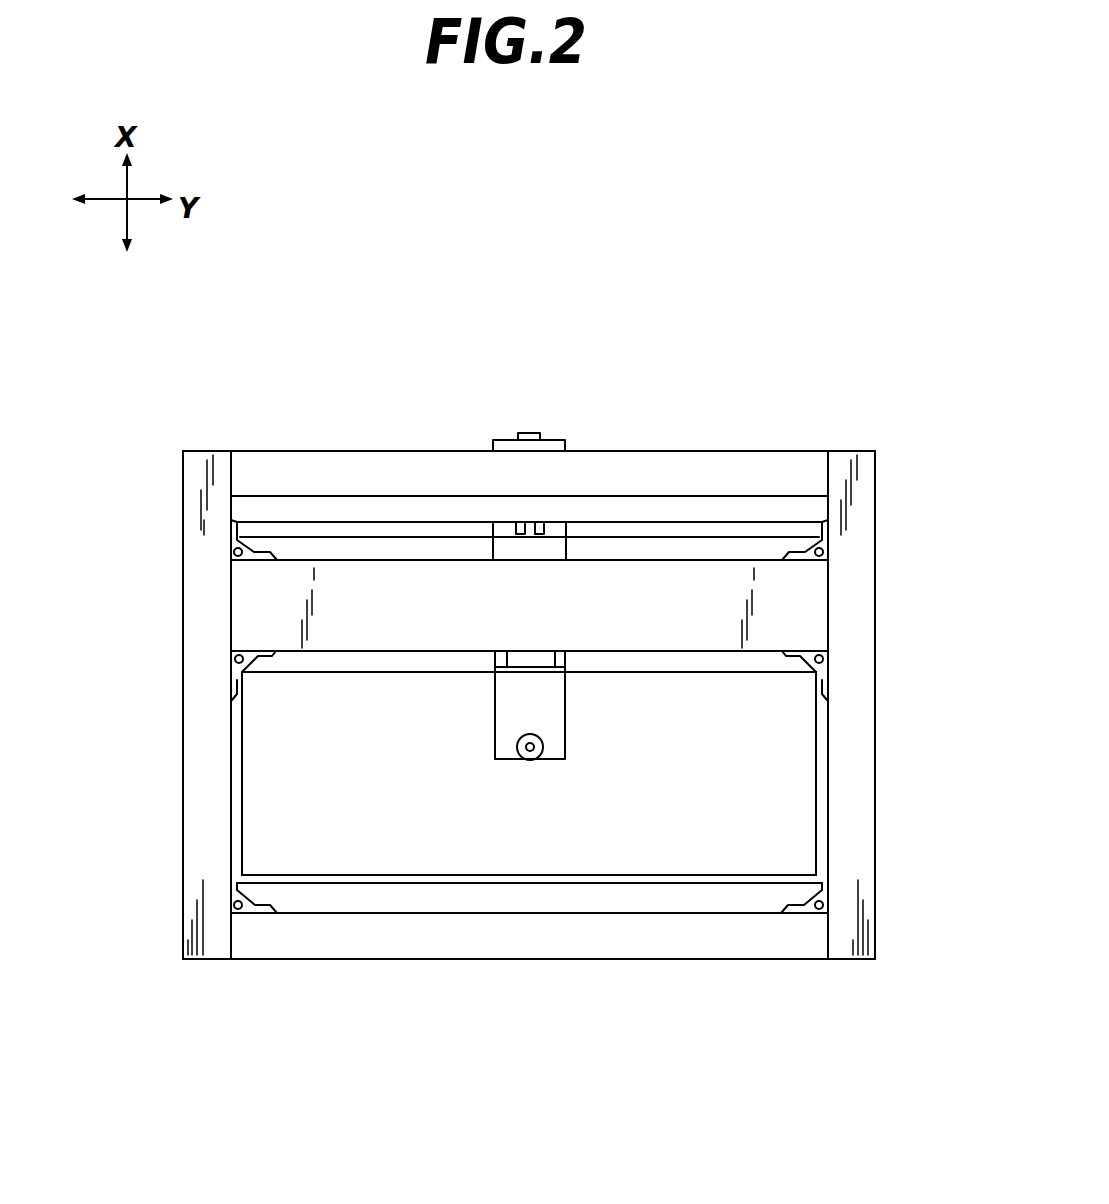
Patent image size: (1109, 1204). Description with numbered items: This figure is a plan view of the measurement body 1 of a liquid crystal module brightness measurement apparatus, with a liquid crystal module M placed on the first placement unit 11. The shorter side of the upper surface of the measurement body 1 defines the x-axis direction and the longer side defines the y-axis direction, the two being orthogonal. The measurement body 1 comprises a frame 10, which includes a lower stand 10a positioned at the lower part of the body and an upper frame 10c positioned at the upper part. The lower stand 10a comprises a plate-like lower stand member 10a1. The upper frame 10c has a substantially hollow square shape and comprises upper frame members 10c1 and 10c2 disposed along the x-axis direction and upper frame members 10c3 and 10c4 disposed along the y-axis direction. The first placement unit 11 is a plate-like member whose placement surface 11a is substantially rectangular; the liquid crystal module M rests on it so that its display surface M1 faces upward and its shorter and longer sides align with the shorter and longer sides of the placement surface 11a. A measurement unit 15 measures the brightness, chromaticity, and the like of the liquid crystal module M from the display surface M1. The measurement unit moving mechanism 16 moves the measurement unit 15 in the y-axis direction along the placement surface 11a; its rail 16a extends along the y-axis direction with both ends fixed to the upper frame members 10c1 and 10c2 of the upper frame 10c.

The measurement body 1 is at (776, 322).
The frame 10 is at (207, 434).
The upper frame 10c is at (179, 479).
The upper frame member 10c1 is at (195, 622).
The upper frame member 10c2 is at (860, 520).
The upper frame member 10c3 is at (657, 463).
The upper frame member 10c4 is at (355, 942).
The lower stand 10a is at (482, 918).
The lower stand member 10a1 is at (557, 895).
The first placement unit 11 is at (673, 885).
The placement surface 11a is at (822, 842).
The measurement unit 15 is at (553, 713).
The measurement unit moving mechanism 16 is at (482, 549).
The rail 16a is at (368, 583).
The liquid crystal module M is at (819, 728).
The display surface M1 is at (790, 800).